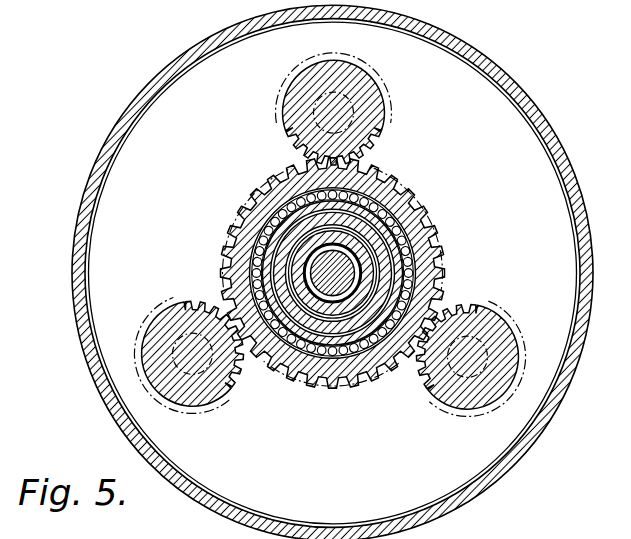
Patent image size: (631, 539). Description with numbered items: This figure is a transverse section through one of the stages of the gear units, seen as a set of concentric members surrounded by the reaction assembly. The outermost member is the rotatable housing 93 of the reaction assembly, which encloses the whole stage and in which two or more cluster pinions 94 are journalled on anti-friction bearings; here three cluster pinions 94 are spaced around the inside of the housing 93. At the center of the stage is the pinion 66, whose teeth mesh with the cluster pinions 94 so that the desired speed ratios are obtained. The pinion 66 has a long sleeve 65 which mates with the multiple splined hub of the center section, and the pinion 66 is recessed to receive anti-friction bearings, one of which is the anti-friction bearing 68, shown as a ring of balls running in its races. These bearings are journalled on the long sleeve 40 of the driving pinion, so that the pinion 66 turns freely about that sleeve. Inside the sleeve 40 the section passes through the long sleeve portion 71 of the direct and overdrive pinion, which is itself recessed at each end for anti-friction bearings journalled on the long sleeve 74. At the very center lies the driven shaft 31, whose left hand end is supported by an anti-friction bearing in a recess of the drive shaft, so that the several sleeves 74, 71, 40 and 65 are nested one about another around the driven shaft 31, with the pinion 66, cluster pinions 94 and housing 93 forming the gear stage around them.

The rotatable housing 93 is at (513, 83).
The cluster pinions 94 is at (279, 118).
The pinion 66 is at (409, 198).
The long sleeve 65 is at (242, 235).
The anti-friction bearing 68 is at (252, 253).
The long sleeve of the driving pinion 40 is at (410, 258).
The long sleeve portion 71 is at (327, 332).
The long sleeve 74 is at (368, 275).
The driven shaft 31 is at (345, 293).